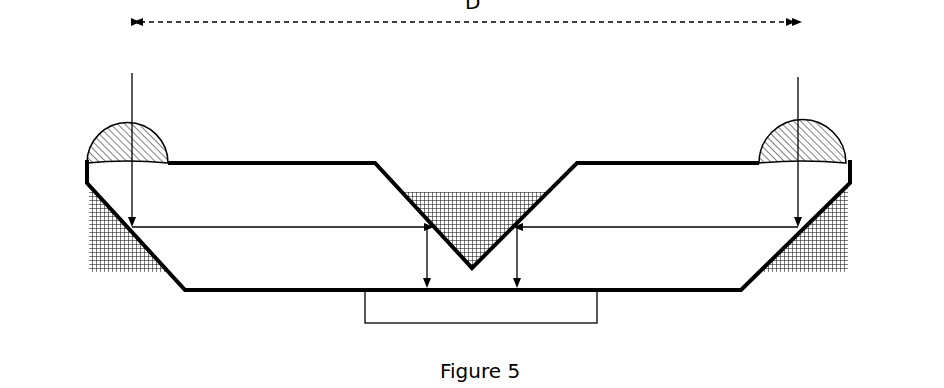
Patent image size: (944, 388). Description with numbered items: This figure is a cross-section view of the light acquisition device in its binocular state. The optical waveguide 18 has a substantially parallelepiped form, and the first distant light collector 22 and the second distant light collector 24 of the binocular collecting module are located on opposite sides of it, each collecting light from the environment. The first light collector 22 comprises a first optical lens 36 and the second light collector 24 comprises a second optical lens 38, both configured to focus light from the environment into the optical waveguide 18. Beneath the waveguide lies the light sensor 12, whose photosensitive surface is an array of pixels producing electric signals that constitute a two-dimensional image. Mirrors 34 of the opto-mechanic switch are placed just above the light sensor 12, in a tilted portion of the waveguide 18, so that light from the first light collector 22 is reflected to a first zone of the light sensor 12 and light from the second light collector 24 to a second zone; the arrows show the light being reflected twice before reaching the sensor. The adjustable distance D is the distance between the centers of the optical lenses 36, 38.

The light sensor 12 is at (481, 306).
The optical waveguide 18 is at (273, 252).
The first distant light collector 22 is at (126, 108).
The second distant light collector 24 is at (788, 116).
The mirrors 34 is at (540, 201).
The first optical lens 36 is at (110, 100).
The second optical lens 38 is at (773, 112).